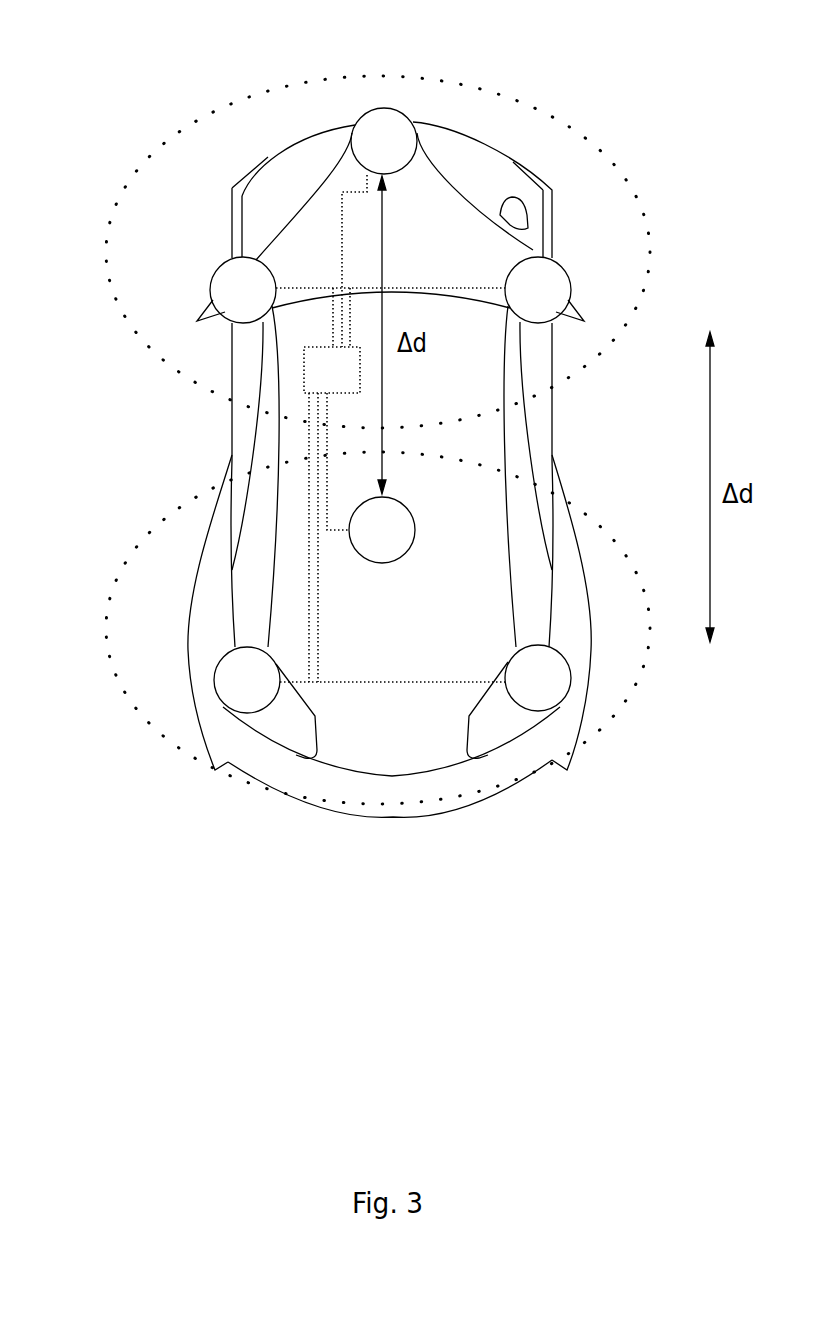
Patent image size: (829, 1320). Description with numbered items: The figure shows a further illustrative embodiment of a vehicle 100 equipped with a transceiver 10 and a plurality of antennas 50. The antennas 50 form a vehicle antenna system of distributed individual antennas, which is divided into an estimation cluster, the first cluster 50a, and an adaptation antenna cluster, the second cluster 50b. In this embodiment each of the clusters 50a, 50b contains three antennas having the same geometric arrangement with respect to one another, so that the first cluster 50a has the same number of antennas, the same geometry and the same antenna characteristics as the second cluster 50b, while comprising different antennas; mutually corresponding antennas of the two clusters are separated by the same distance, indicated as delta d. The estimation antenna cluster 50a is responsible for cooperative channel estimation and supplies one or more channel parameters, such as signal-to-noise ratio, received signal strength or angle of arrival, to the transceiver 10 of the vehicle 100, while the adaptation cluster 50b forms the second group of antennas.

The control unit 10 is at (324, 388).
The sensor 50 is at (361, 138).
The estimation cluster 50a is at (385, 50).
The adaption cluster 50b is at (388, 845).
The vehicle 100 is at (262, 768).